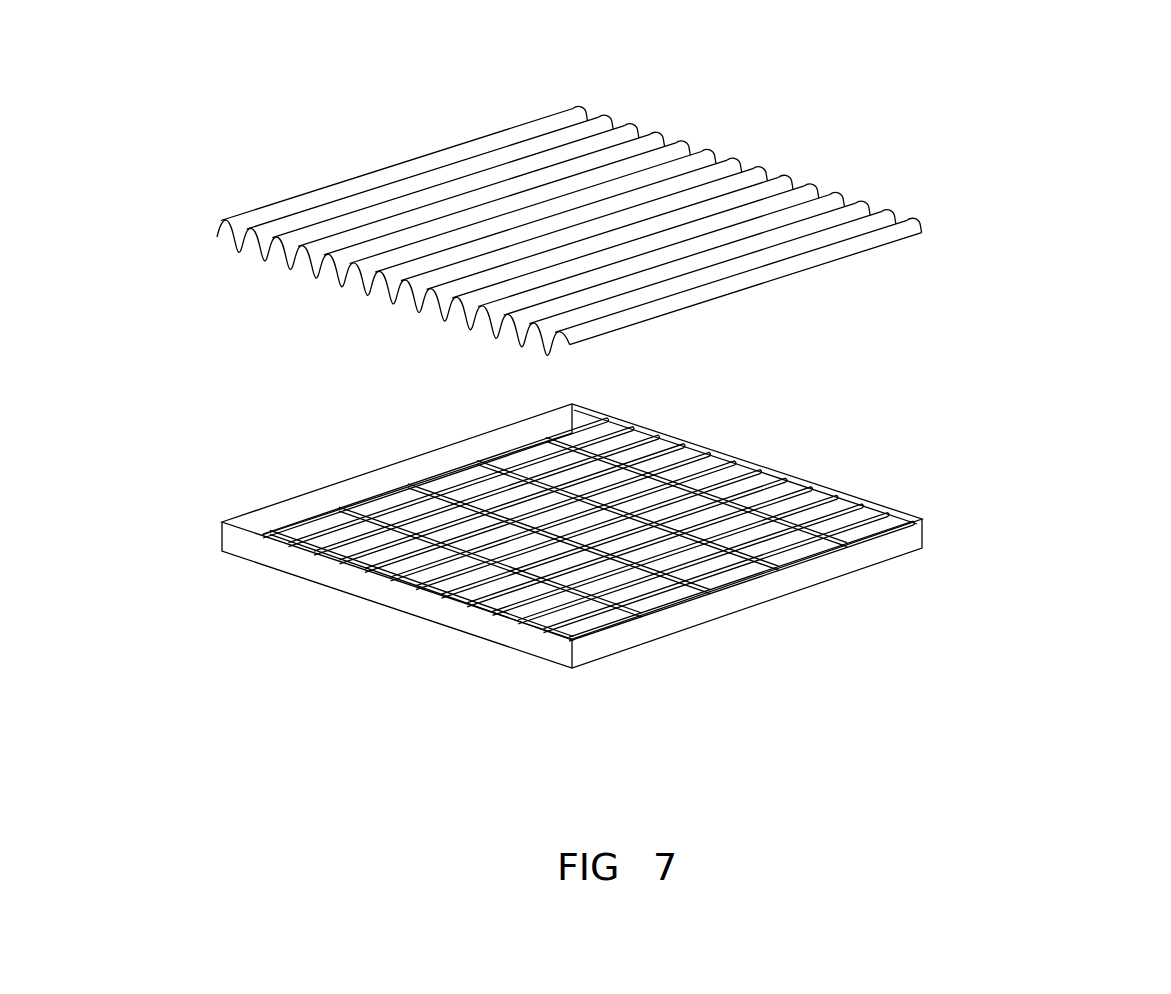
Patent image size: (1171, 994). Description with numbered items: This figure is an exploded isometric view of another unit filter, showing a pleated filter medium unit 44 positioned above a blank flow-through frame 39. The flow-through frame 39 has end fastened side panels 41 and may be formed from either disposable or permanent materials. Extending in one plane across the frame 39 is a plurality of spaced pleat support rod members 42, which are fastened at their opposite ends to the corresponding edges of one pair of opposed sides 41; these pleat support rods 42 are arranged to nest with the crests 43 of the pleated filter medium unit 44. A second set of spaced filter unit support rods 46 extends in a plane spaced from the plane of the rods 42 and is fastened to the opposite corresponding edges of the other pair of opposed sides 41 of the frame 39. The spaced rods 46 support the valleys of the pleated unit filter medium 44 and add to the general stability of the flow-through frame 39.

The flow-through frame 39 is at (617, 555).
The side panels 41 is at (447, 613).
The pleat support rod members 42 is at (312, 532).
The crests 43 is at (783, 178).
The pleated filter medium unit 44 is at (679, 193).
The filter unit support rods 46 is at (477, 467).